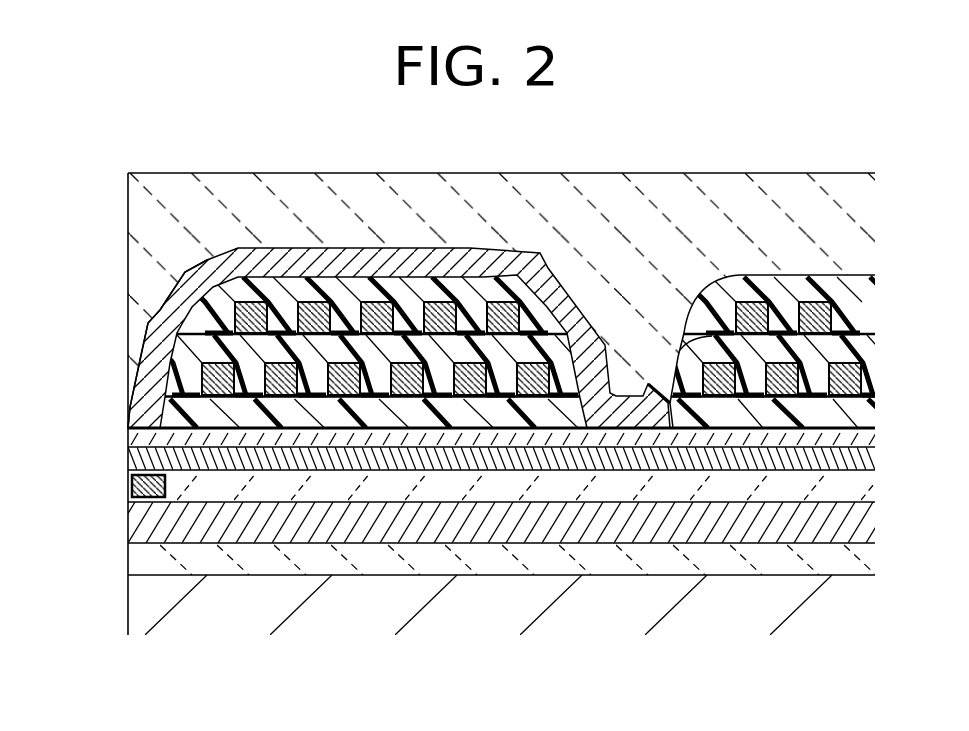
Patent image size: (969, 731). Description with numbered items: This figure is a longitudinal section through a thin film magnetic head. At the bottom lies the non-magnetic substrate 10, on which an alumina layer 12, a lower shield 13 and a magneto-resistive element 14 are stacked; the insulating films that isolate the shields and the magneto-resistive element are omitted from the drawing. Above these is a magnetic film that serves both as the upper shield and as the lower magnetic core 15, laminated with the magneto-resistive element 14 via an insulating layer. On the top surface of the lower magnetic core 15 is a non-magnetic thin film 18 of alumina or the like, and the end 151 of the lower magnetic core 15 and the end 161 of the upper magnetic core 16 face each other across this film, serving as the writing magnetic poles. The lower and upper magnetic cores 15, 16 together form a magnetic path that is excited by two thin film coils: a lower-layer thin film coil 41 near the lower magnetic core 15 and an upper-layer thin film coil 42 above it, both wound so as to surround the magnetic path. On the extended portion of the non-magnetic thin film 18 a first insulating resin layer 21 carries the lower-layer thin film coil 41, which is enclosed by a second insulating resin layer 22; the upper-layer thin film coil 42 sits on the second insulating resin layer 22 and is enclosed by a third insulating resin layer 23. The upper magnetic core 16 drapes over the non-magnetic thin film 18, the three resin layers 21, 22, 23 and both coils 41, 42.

The non-magnetic substrate 10 is at (380, 605).
The alumina layer 12 is at (465, 560).
The lower shield 13 is at (548, 520).
The magneto-resistive element 14 is at (130, 489).
The lower magnetic core 15 is at (318, 465).
The end of the lower magnetic core 151 is at (145, 460).
The upper magnetic core 16 is at (248, 257).
The end of the upper magnetic core 161 is at (135, 415).
The non-magnetic thin film 18 is at (200, 440).
The first insulating resin layer 21 is at (255, 420).
The second insulating resin layer 22 is at (470, 350).
The third insulating resin layer 23 is at (302, 285).
The lower-layer thin film coil 41 is at (537, 380).
The upper-layer thin film coil 42 is at (368, 307).